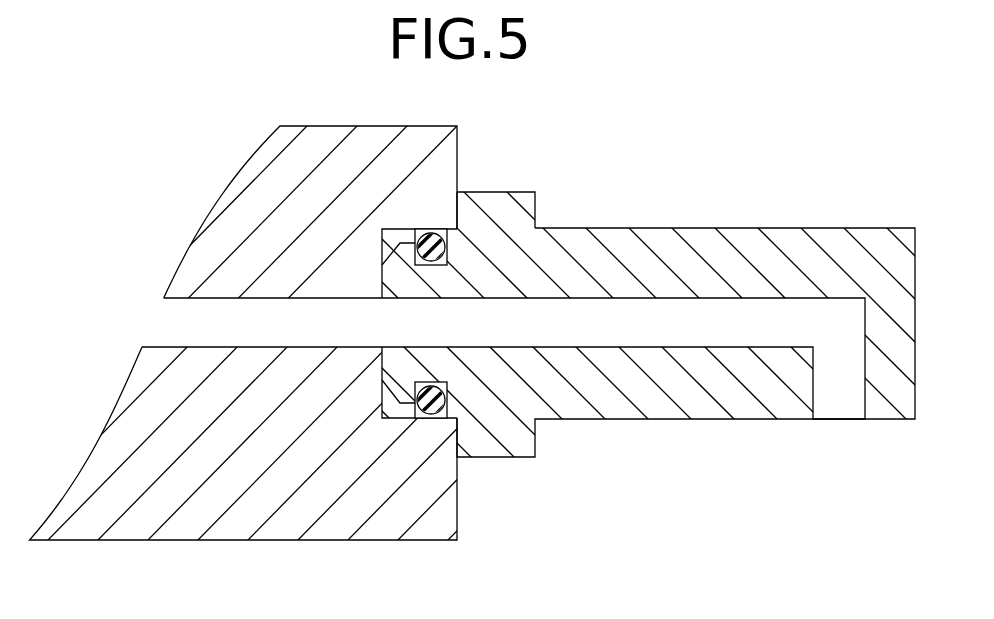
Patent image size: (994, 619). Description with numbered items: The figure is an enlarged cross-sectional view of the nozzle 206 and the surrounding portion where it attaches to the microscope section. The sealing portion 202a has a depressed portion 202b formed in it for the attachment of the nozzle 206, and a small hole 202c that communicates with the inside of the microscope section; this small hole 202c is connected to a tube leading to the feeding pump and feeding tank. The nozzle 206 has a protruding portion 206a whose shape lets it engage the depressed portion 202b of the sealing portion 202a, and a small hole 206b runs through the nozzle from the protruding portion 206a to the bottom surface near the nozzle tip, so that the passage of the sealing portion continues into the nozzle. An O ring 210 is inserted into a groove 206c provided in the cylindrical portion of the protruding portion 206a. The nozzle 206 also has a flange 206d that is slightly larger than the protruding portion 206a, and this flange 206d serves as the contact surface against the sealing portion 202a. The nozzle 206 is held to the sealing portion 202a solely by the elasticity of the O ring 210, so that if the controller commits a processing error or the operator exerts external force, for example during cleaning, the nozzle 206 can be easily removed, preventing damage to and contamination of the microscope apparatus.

The sealing portion 202a is at (137, 528).
The depressed portion 202b is at (405, 420).
The small hole 202c is at (165, 323).
The nozzle 206 is at (830, 240).
The protruding portion 206a is at (400, 372).
The small hole 206b is at (712, 313).
The groove 206c is at (430, 268).
The flange 206d is at (498, 207).
The O ring 210 is at (447, 425).